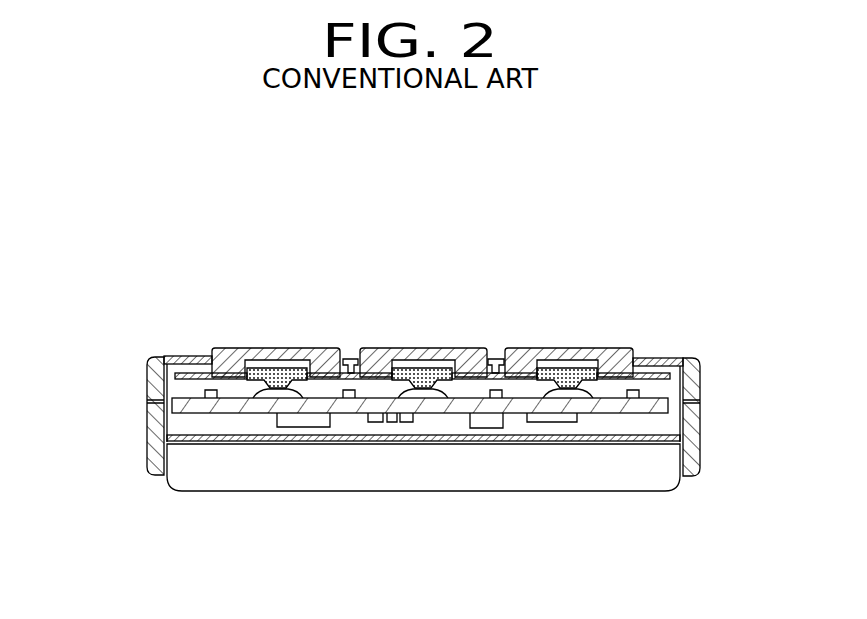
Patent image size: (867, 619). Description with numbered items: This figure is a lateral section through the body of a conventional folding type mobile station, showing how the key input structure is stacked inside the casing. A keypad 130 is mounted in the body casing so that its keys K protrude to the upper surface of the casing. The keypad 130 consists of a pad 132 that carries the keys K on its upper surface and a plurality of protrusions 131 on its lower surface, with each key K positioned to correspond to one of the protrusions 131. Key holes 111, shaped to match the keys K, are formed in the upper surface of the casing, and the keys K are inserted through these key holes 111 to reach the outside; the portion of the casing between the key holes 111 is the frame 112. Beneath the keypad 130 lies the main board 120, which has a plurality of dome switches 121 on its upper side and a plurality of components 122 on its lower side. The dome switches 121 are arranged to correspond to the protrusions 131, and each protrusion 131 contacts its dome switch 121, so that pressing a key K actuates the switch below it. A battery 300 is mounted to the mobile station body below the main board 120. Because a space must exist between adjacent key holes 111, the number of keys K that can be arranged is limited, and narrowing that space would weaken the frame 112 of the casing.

The key hole 111 is at (212, 350).
The key K is at (411, 318).
The frame 112 is at (498, 357).
The keypad 130 is at (646, 350).
The pad 132 is at (165, 357).
The dome switch 121 is at (278, 403).
The protrusion 131 is at (305, 398).
The battery 300 is at (395, 476).
The component 122 is at (548, 415).
The main board 120 is at (628, 425).